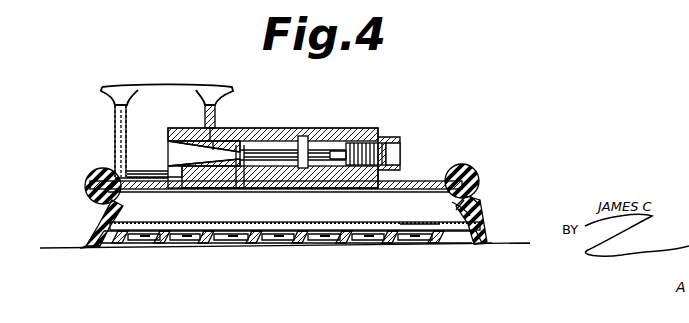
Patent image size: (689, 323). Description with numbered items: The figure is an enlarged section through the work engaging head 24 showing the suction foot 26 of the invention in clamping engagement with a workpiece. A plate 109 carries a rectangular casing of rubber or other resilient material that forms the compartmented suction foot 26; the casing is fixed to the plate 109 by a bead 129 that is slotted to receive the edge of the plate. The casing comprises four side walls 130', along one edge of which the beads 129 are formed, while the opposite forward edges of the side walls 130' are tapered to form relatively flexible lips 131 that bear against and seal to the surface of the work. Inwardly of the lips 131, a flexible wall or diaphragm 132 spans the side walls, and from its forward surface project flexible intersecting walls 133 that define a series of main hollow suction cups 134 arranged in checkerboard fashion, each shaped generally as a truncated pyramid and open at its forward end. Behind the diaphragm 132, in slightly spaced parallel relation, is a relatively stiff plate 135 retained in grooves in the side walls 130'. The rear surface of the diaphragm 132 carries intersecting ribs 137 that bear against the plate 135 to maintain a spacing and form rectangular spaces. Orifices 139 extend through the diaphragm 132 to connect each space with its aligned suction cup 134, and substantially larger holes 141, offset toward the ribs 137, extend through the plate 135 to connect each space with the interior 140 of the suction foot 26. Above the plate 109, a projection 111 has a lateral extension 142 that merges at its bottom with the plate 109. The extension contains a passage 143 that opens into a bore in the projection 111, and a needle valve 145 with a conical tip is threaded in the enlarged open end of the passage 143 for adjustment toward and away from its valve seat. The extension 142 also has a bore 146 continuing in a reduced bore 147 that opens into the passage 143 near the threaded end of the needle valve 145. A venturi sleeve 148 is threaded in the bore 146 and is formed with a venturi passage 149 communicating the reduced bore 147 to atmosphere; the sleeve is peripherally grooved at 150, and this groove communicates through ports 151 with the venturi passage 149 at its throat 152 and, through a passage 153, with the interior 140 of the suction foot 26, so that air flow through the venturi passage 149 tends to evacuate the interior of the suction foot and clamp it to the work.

The work engaging head 24 is at (412, 160).
The suction foot 26 is at (485, 192).
The plate 109 is at (418, 181).
The projection 111 is at (117, 114).
The bead 129 is at (90, 177).
The side walls 130' is at (289, 221).
The flexible lips 131 is at (96, 246).
The flexible wall or diaphragm 132 is at (470, 220).
The intersecting walls 133 is at (150, 248).
The main suction cups 134 is at (124, 247).
The stiff plate 135 is at (478, 202).
The ribs 137 is at (422, 208).
The orifices 139 is at (136, 244).
The interior of the suction foot 140 is at (478, 188).
The holes 141 is at (116, 222).
The lateral extension 142 is at (372, 130).
The passage 143 is at (342, 186).
The needle valve 145 is at (398, 160).
The bore 146 is at (265, 142).
The reduced bore 147 is at (344, 143).
The venturi sleeve 148 is at (297, 135).
The venturi passage 149 is at (208, 128).
The peripheral groove 150 is at (213, 140).
The ports 151 is at (241, 152).
The throat 152 is at (256, 176).
The passage 153 is at (234, 190).